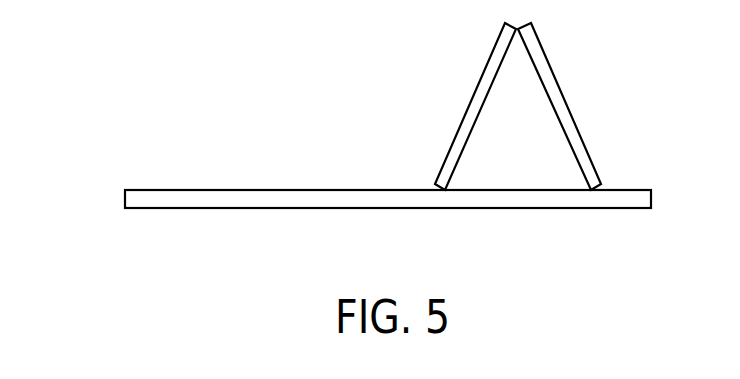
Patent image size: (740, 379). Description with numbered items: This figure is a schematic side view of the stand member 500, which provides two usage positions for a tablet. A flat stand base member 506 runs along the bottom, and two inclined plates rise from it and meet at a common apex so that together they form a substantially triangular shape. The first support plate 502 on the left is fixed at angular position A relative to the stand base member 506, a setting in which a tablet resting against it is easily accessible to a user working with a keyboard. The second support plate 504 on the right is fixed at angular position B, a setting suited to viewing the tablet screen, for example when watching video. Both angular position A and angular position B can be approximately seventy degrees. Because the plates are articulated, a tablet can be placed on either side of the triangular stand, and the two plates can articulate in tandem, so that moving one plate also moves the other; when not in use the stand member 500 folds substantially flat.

The stand member 500 is at (155, 28).
The first support plate 502 is at (480, 79).
The second support plate 504 is at (557, 80).
The stand base member 506 is at (124, 199).
The angular position A is at (489, 128).
The angular position B is at (544, 128).